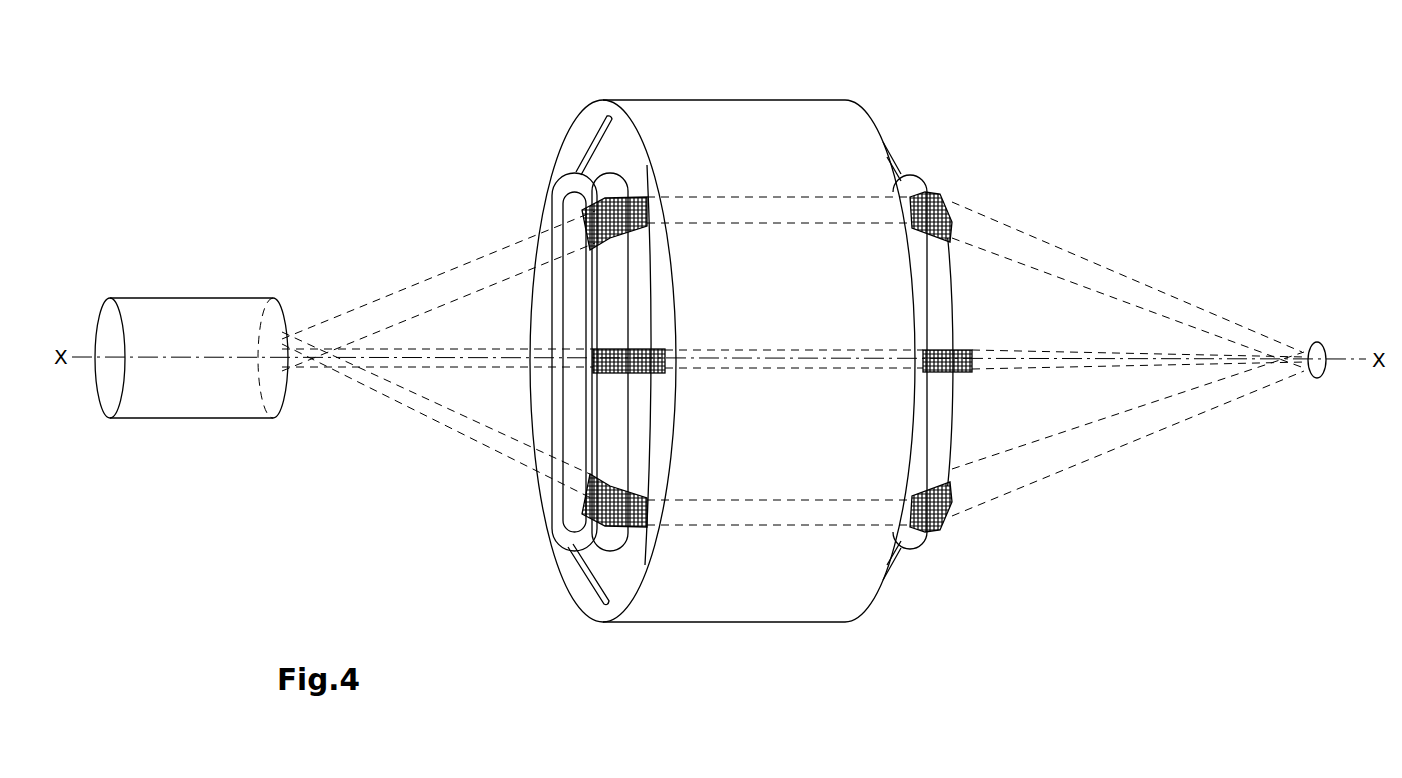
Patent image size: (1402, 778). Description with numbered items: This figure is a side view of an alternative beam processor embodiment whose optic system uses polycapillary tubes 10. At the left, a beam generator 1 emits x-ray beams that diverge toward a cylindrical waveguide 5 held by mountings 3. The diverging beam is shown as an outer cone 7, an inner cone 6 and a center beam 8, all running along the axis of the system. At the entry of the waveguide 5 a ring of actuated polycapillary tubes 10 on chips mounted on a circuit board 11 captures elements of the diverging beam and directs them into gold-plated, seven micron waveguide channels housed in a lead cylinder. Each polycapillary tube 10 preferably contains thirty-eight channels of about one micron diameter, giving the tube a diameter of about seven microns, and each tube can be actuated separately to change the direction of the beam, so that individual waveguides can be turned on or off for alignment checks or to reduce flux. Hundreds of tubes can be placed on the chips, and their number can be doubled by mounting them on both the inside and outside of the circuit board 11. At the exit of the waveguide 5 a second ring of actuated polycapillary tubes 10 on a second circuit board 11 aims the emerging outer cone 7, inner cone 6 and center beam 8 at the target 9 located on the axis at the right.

The beam generator 1 is at (191, 358).
The mountings 3 is at (584, 571).
The waveguide 5 is at (722, 346).
The inner cone 6 is at (1120, 470).
The outer cone 7 is at (1046, 242).
The center beam 8 is at (793, 347).
The target 9 is at (1311, 336).
The polycapillary tube 10 is at (588, 207).
The circuit board 11 is at (1018, 552).